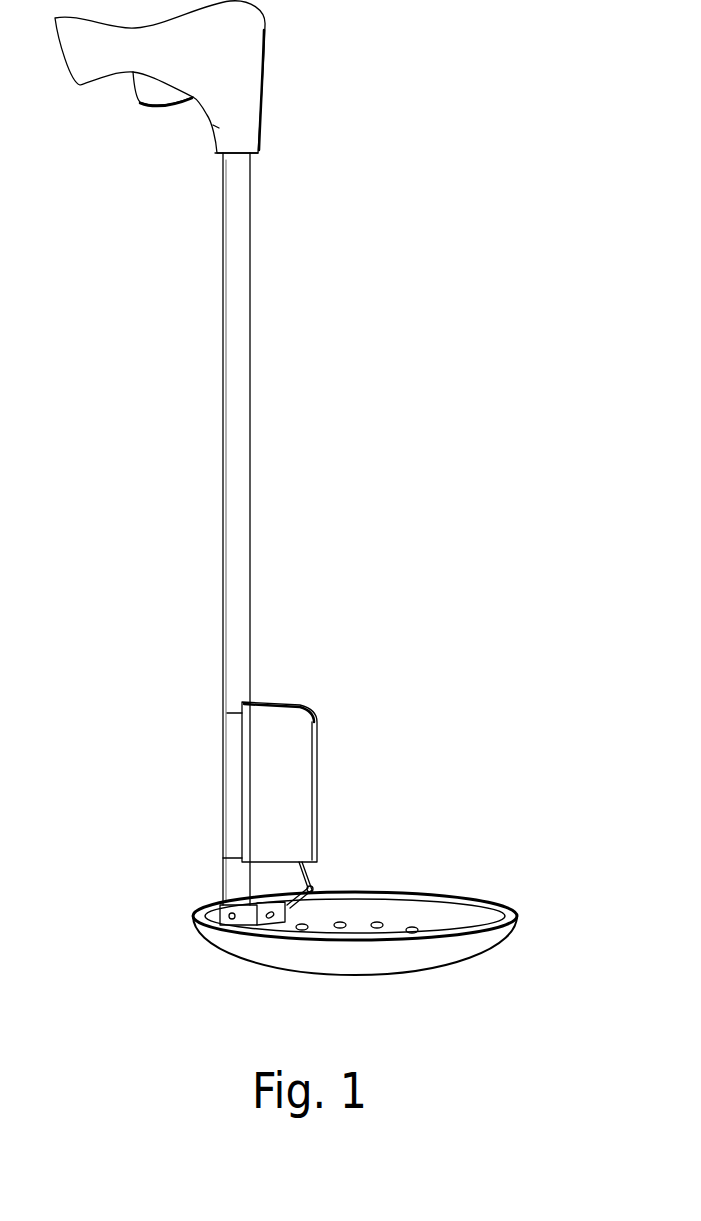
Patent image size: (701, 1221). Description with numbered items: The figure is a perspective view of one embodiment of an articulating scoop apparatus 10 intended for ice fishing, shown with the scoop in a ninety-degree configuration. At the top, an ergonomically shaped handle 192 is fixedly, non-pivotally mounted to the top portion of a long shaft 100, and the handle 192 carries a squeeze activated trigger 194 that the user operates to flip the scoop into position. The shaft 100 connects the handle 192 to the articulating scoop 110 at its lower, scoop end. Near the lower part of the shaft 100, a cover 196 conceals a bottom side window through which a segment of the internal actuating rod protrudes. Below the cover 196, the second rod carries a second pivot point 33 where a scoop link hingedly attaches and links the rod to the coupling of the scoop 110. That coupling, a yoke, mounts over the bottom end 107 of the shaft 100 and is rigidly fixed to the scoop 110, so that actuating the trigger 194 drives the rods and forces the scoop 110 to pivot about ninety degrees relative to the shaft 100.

The articulating scoop apparatus 10 is at (530, 308).
The handle 192 is at (238, 55).
The squeeze activated trigger 194 is at (158, 107).
The shaft 100 is at (238, 550).
The cover 196 is at (287, 793).
The second pivot point 33 is at (312, 880).
The bottom end 107 is at (212, 878).
The articulating scoop 110 is at (400, 913).